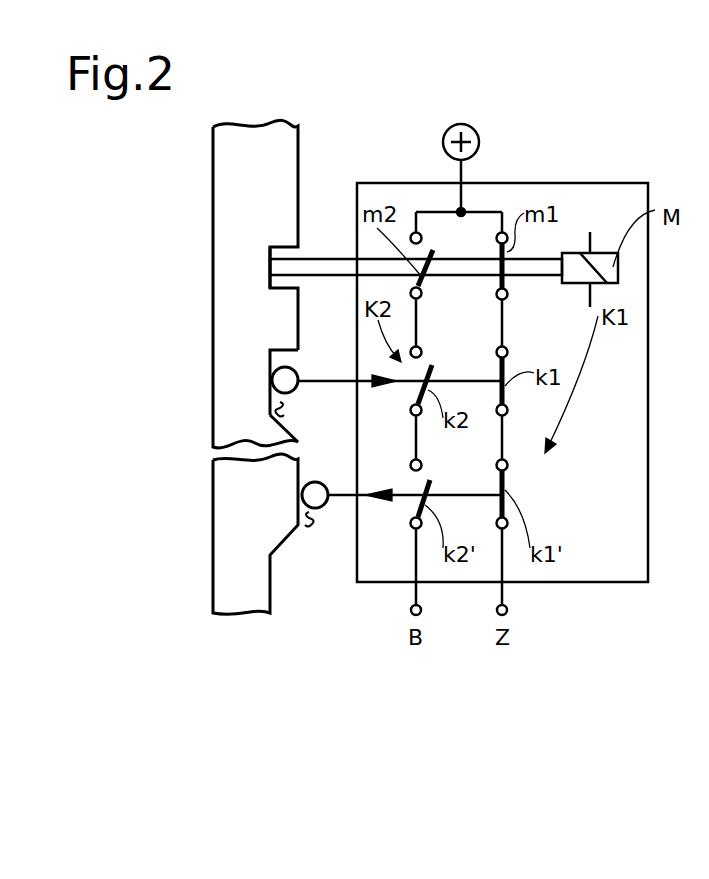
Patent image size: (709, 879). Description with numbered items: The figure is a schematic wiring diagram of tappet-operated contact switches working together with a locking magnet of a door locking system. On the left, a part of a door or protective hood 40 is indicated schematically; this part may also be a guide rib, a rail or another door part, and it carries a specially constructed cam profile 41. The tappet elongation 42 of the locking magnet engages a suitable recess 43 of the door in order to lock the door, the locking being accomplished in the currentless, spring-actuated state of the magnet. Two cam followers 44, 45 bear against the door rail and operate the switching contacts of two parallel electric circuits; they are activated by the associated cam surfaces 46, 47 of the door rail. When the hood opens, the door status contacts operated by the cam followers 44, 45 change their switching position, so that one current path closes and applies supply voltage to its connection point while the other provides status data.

The door or protective hood 40 is at (243, 596).
The cam profile 41 is at (272, 364).
The tappet elongation 42 is at (319, 265).
The recess 43 is at (268, 281).
The cam follower 44 is at (276, 381).
The cam follower 45 is at (306, 495).
The cam surface 46 is at (272, 415).
The cam surface 47 is at (296, 527).